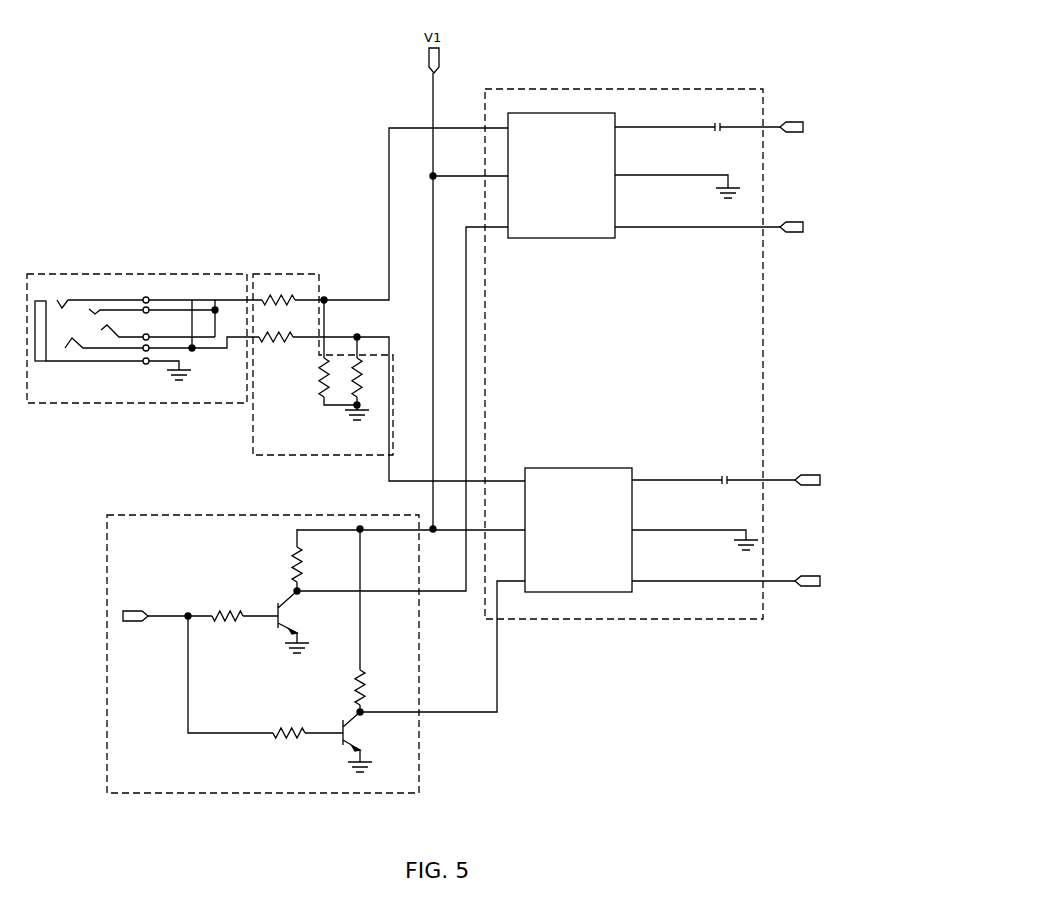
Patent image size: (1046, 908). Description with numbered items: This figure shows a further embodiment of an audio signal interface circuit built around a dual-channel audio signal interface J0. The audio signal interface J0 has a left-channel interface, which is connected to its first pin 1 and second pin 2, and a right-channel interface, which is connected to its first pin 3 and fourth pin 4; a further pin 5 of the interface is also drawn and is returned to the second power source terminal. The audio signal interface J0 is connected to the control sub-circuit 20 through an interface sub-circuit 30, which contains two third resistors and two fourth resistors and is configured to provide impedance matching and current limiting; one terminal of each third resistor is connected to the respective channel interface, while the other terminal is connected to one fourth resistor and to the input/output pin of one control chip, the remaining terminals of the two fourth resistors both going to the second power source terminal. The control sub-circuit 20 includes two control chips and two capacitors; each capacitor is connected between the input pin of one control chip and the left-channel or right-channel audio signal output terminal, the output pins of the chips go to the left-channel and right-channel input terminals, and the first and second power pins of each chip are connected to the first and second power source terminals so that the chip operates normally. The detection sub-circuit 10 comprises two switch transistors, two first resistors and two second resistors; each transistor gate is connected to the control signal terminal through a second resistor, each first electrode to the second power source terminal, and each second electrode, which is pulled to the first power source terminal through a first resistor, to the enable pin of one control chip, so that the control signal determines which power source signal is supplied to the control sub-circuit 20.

The audio signal interface J0 is at (100, 274).
The first pin 1 is at (117, 332).
The second pin 2 is at (111, 314).
The first pin 3 is at (99, 341).
The fourth pin 4 is at (100, 297).
The jack ground pin 5 is at (94, 370).
The interface sub-circuit 30 is at (268, 274).
The control sub-circuit 20 is at (615, 89).
The detection sub-circuit 10 is at (165, 515).